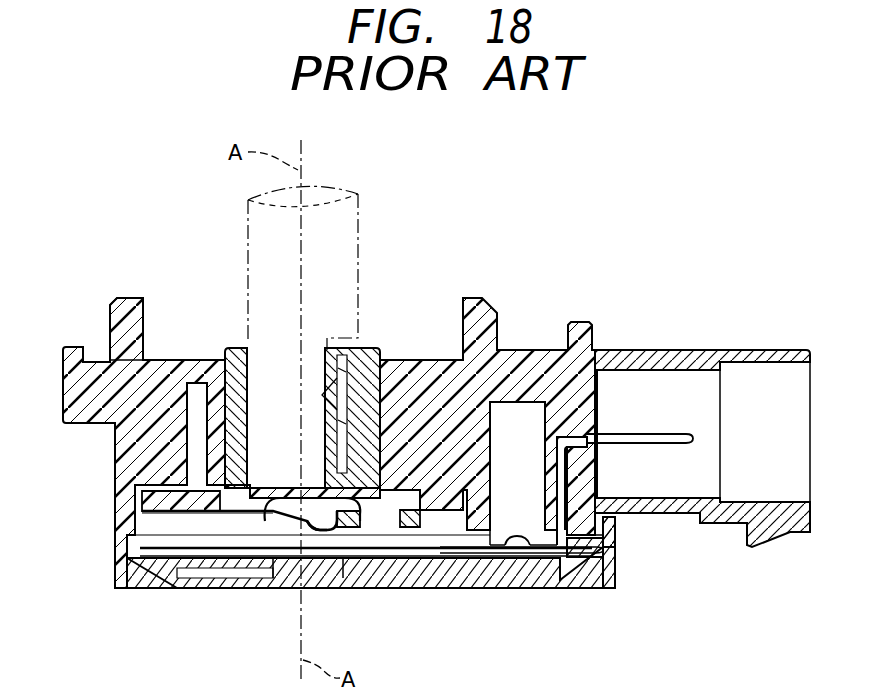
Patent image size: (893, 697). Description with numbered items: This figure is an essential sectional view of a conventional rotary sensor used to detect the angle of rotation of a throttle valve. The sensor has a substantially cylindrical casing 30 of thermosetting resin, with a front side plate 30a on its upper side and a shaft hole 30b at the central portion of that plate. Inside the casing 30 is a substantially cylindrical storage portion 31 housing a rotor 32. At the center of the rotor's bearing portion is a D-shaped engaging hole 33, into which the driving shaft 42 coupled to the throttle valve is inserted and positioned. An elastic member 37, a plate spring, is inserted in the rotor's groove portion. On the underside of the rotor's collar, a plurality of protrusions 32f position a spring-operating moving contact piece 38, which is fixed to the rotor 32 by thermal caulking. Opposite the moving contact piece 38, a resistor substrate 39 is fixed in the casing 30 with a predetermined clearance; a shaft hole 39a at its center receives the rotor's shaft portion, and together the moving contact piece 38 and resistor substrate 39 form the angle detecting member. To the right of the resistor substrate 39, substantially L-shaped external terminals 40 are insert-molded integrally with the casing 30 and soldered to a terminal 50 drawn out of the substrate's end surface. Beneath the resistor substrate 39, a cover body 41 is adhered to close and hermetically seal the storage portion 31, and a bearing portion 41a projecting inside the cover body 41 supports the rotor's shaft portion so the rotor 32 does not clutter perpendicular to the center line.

The casing 30 is at (104, 454).
The front side plate 30a is at (168, 360).
The shaft hole 30b is at (235, 363).
The storage portion 31 is at (182, 526).
The rotor 32 is at (142, 515).
The protrusions 32f is at (238, 512).
The engaging hole 33 is at (262, 413).
The elastic member 37 is at (330, 385).
The moving contact piece 38 is at (273, 524).
The resistor substrate 39 is at (153, 542).
The shaft hole 39a is at (272, 520).
The external terminals 40 is at (652, 446).
The cover body 41 is at (507, 590).
The bearing portion 41a is at (338, 590).
The driving shaft 42 is at (327, 213).
The terminal 50 is at (545, 542).